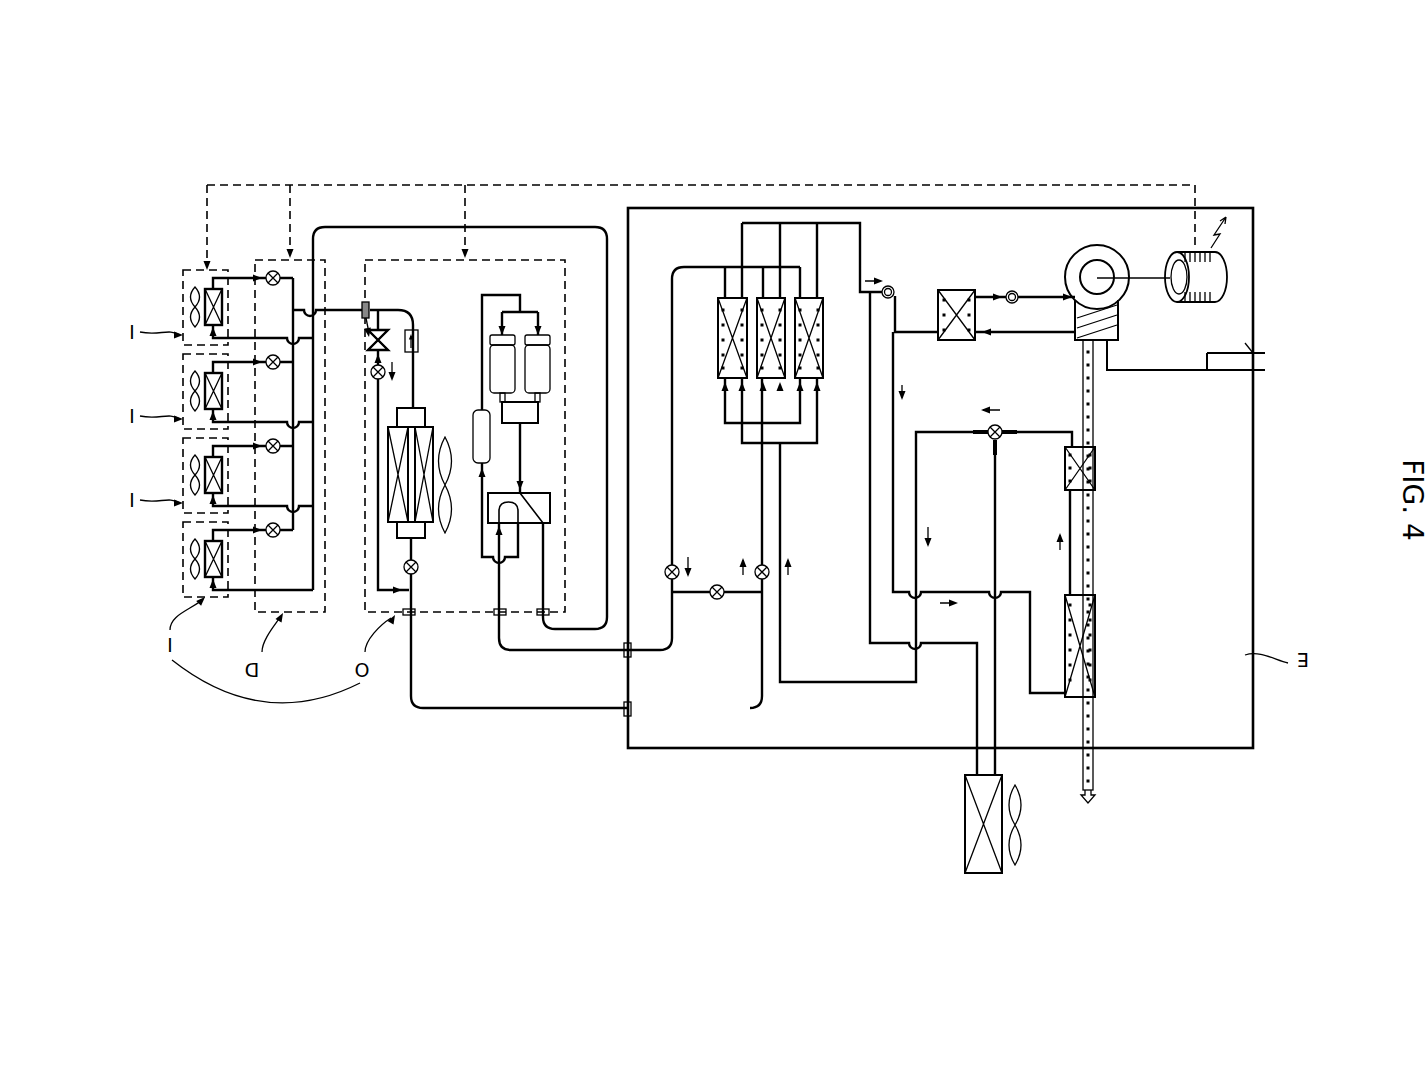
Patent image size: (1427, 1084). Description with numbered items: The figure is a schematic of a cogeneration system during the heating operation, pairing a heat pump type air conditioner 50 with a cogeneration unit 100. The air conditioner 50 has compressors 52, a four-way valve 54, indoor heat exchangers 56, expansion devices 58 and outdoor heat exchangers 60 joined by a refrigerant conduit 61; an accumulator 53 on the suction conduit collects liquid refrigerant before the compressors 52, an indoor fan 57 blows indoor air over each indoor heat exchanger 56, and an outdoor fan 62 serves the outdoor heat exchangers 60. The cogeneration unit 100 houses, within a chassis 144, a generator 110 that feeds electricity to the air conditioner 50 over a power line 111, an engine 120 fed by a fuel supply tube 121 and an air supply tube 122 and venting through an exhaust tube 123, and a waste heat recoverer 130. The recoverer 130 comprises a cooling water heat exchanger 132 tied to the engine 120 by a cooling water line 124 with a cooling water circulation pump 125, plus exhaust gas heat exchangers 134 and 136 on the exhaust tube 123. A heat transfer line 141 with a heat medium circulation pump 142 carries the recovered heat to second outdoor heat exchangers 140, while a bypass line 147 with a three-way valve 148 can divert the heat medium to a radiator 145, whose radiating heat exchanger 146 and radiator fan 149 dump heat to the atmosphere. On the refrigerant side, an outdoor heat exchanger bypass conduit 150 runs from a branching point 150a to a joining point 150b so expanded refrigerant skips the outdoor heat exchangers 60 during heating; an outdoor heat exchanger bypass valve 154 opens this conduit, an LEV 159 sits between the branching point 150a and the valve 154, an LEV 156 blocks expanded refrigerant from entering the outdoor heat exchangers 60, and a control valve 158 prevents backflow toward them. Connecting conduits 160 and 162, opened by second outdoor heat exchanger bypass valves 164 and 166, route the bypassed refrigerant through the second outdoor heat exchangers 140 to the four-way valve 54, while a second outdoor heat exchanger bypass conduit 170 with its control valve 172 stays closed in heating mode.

The heat pump type air conditioner 50 is at (266, 692).
The compressor 52 is at (550, 370).
The accumulator 53 is at (475, 412).
The 4-way valve 54 is at (550, 510).
The indoor heat exchanger 56 is at (223, 430).
The indoor fan 57 is at (223, 430).
The expansion device 58 is at (273, 537).
The outdoor heat exchanger 60 is at (388, 508).
The refrigerant conduit 61 is at (343, 227).
The outdoor fan 62 is at (447, 528).
The cogeneration unit 100 is at (800, 819).
The generator 110 is at (1220, 273).
The power line 111 is at (780, 185).
The engine 120 is at (1098, 245).
The fuel supply tube 121 is at (1242, 371).
The air supply tube 122 is at (1245, 343).
The exhaust tube 123 is at (1096, 790).
The cooling water line 124 is at (993, 292).
The cooling water circulation pump 125 is at (1012, 291).
The waste heat recoverer 130 is at (1218, 572).
The cooling water heat exchanger 132 is at (965, 341).
The exhaust gas heat exchanger 134 is at (1095, 623).
The exhaust gas heat exchanger 136 is at (1095, 478).
The second outdoor heat exchanger 140 is at (712, 293).
The heat transfer line 141 is at (860, 684).
The heat medium circulation pump 142 is at (898, 286).
The chassis 144 is at (1253, 703).
The radiator 145 is at (982, 837).
The radiating heat exchanger 146 is at (970, 817).
The bypass line 147 is at (990, 718).
The 3-way valve 148 is at (994, 443).
The radiator fan 149 is at (1022, 860).
The outdoor heat exchanger bypass conduit 150 is at (378, 588).
The branching point 150a is at (366, 302).
The joining point 150b is at (416, 612).
The outdoor heat exchanger bypass valve 154 is at (372, 378).
The LEV 156 is at (415, 330).
The control valve 158 is at (418, 567).
The LEV 159 is at (397, 310).
The second outdoor heat exchanger connecting conduit 160 is at (542, 710).
The second outdoor heat exchanger connecting conduit 162 is at (587, 650).
The second outdoor heat exchanger bypass valve 164 is at (770, 577).
The second outdoor heat exchanger bypass valve 166 is at (668, 580).
The second outdoor heat exchanger bypass conduit 170 is at (742, 596).
The control valve 172 is at (712, 598).